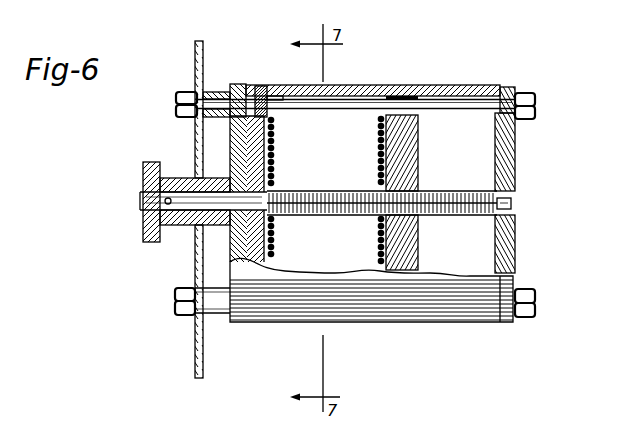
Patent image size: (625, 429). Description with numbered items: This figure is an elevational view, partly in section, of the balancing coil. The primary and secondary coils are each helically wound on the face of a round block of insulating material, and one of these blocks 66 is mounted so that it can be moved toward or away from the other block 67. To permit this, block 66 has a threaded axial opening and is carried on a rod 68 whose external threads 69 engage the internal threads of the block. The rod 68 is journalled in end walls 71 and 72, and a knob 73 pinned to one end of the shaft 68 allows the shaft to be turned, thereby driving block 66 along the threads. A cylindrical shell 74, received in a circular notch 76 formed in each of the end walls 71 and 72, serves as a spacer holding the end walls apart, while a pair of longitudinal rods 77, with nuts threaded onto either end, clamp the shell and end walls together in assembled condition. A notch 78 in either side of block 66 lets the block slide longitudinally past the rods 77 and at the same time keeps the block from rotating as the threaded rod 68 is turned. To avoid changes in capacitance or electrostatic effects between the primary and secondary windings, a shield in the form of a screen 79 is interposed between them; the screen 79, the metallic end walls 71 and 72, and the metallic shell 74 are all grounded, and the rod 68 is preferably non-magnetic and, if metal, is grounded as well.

The block 66 is at (416, 149).
The block 67 is at (264, 71).
The rod 68 is at (512, 206).
The external threads 69 is at (446, 193).
The end wall 71 is at (515, 165).
The end wall 72 is at (236, 146).
The knob 73 is at (145, 236).
The cylindrical shell 74 is at (455, 86).
The circular notch 76 is at (243, 86).
The longitudinal rods 77 is at (331, 110).
The notch 78 is at (418, 126).
The screen 79 is at (276, 147).